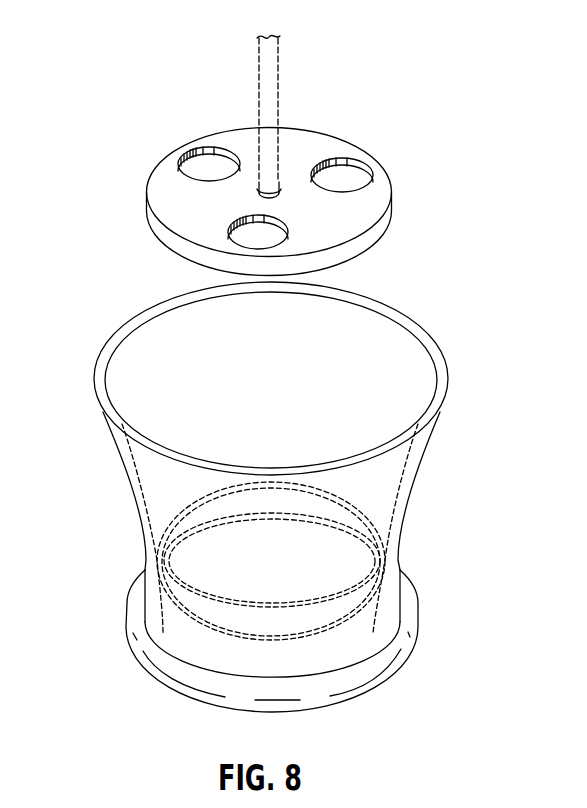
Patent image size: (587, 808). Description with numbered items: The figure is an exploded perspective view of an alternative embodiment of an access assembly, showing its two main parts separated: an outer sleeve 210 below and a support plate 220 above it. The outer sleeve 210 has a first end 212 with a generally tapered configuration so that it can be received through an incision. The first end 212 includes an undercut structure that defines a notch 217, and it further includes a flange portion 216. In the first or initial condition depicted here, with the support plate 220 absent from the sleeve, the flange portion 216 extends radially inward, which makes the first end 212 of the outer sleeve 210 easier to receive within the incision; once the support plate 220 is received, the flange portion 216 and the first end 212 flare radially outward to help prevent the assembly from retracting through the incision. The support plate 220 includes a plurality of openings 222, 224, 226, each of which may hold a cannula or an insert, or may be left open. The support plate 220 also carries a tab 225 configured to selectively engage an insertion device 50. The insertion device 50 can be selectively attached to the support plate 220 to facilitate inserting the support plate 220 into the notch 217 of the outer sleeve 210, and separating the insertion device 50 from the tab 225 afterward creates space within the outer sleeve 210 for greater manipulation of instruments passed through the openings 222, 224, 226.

The insertion device 50 is at (277, 90).
The outer sleeve 210 is at (283, 497).
The first end 212 is at (143, 556).
The flange portion 216 is at (393, 610).
The notch 217 is at (401, 557).
The support plate 220 is at (262, 194).
The opening 222 is at (368, 162).
The opening 224 is at (228, 234).
The tab 225 is at (283, 186).
The opening 226 is at (188, 155).